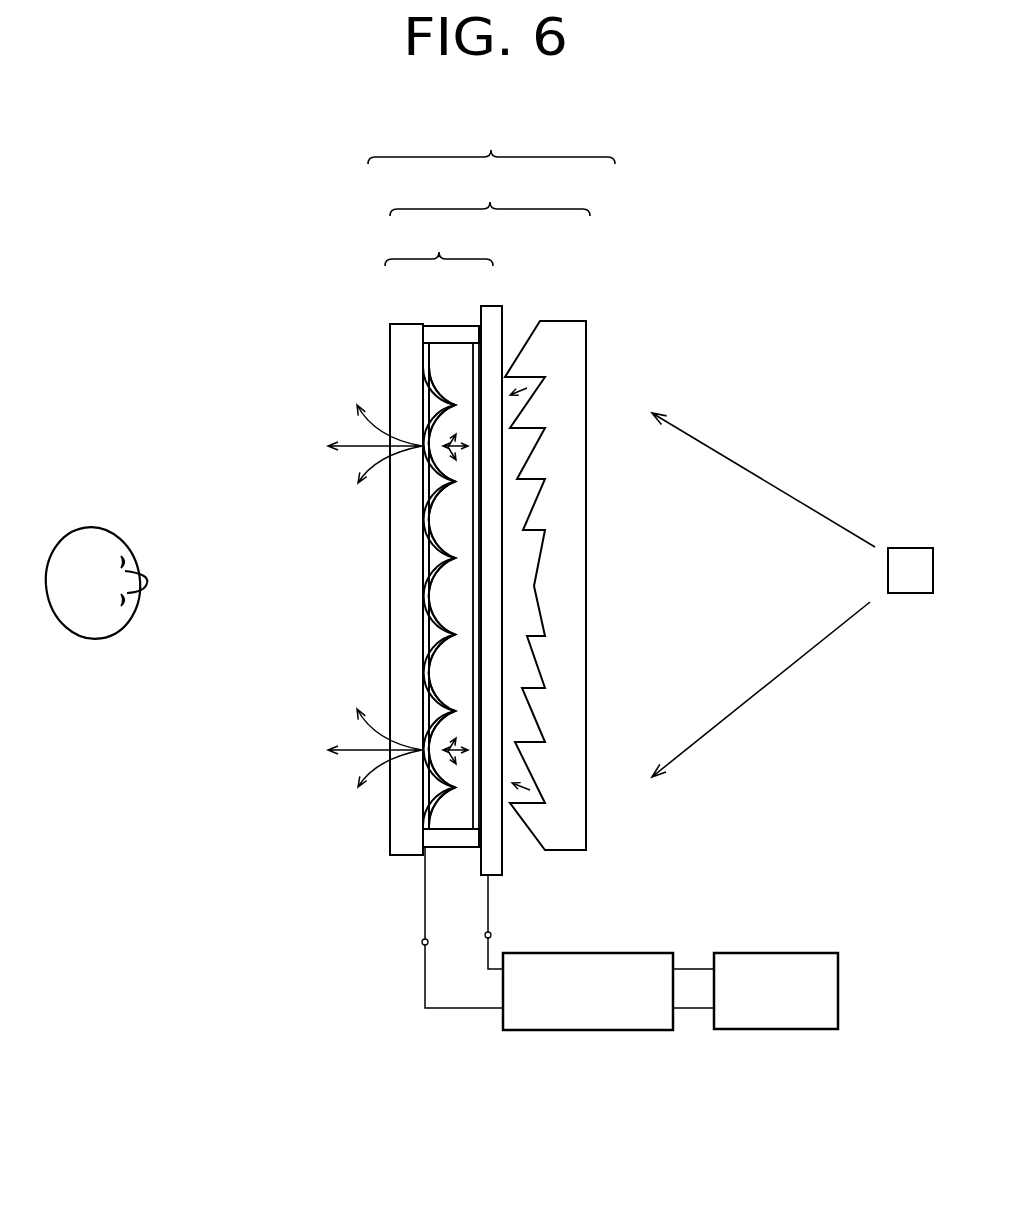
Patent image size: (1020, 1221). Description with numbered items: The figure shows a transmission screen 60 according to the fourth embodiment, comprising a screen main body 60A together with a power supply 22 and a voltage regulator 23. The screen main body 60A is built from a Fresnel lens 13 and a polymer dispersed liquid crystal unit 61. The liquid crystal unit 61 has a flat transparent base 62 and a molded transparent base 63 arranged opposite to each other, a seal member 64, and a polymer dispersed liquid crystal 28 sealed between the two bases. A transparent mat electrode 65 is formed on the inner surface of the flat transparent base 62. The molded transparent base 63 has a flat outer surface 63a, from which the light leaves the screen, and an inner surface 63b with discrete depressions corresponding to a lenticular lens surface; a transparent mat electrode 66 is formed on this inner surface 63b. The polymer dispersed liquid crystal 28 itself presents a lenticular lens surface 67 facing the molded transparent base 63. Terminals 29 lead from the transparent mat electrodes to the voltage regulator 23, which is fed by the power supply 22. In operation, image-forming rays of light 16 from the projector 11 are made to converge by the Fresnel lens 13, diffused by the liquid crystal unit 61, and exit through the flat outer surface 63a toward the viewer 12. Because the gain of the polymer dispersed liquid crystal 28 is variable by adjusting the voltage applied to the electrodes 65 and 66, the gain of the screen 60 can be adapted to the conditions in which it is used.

The transmission screen 60 is at (491, 139).
The screen main body 60A is at (490, 192).
The polymer dispersed liquid crystal unit 61 is at (439, 241).
The flat transparent base 62 is at (493, 312).
The molded transparent base 63 is at (390, 340).
The flat outer surface 63a is at (391, 653).
The inner surface 63b is at (427, 589).
The seal member 64 is at (448, 328).
The transparent mat electrode 65 is at (482, 368).
The transparent mat electrode 66 is at (427, 530).
The lenticular lens surface 67 is at (430, 677).
The polymer dispersed liquid crystal 28 is at (445, 372).
The Fresnel lens 13 is at (560, 320).
The terminals 29 is at (421, 942).
The voltage regulator 23 is at (608, 953).
The power supply 22 is at (775, 953).
The projector 11 is at (903, 595).
The rays of light 16 is at (795, 498).
The viewer 12 is at (97, 640).